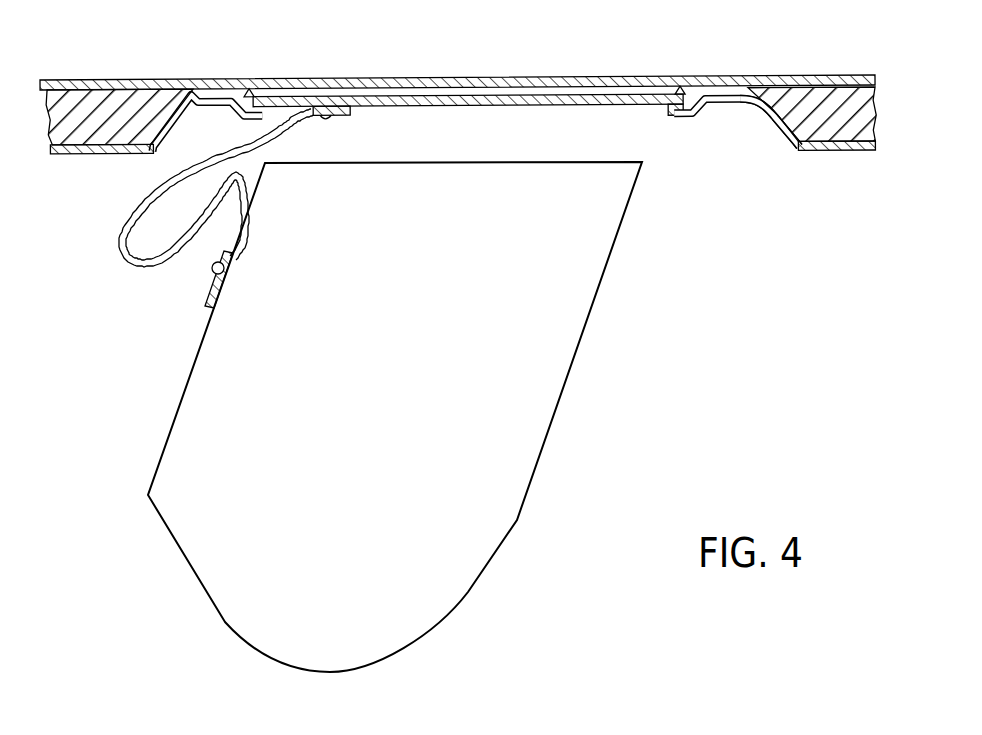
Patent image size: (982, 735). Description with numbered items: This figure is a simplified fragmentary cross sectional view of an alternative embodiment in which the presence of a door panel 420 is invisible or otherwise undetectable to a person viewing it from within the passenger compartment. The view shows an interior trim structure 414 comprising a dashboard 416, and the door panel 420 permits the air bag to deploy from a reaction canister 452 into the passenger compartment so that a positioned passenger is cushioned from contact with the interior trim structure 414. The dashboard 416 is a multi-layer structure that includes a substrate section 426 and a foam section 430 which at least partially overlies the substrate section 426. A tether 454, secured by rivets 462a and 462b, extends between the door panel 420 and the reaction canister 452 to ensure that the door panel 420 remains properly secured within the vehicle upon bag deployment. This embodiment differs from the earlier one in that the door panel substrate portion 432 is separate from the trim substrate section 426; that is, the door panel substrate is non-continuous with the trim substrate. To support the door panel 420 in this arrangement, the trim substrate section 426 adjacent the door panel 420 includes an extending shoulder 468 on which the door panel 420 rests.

The interior trim structure 414 is at (855, 69).
The dashboard 416 is at (784, 69).
The door panel 420 is at (457, 57).
The substrate section 426 is at (843, 154).
The foam section 430 is at (798, 150).
The door panel substrate portion 432 is at (448, 110).
The reaction canister 452 is at (536, 350).
The tether 454 is at (131, 258).
The rivet 462a is at (208, 275).
The rivet 462b is at (323, 118).
The extending shoulder 468 is at (242, 124).